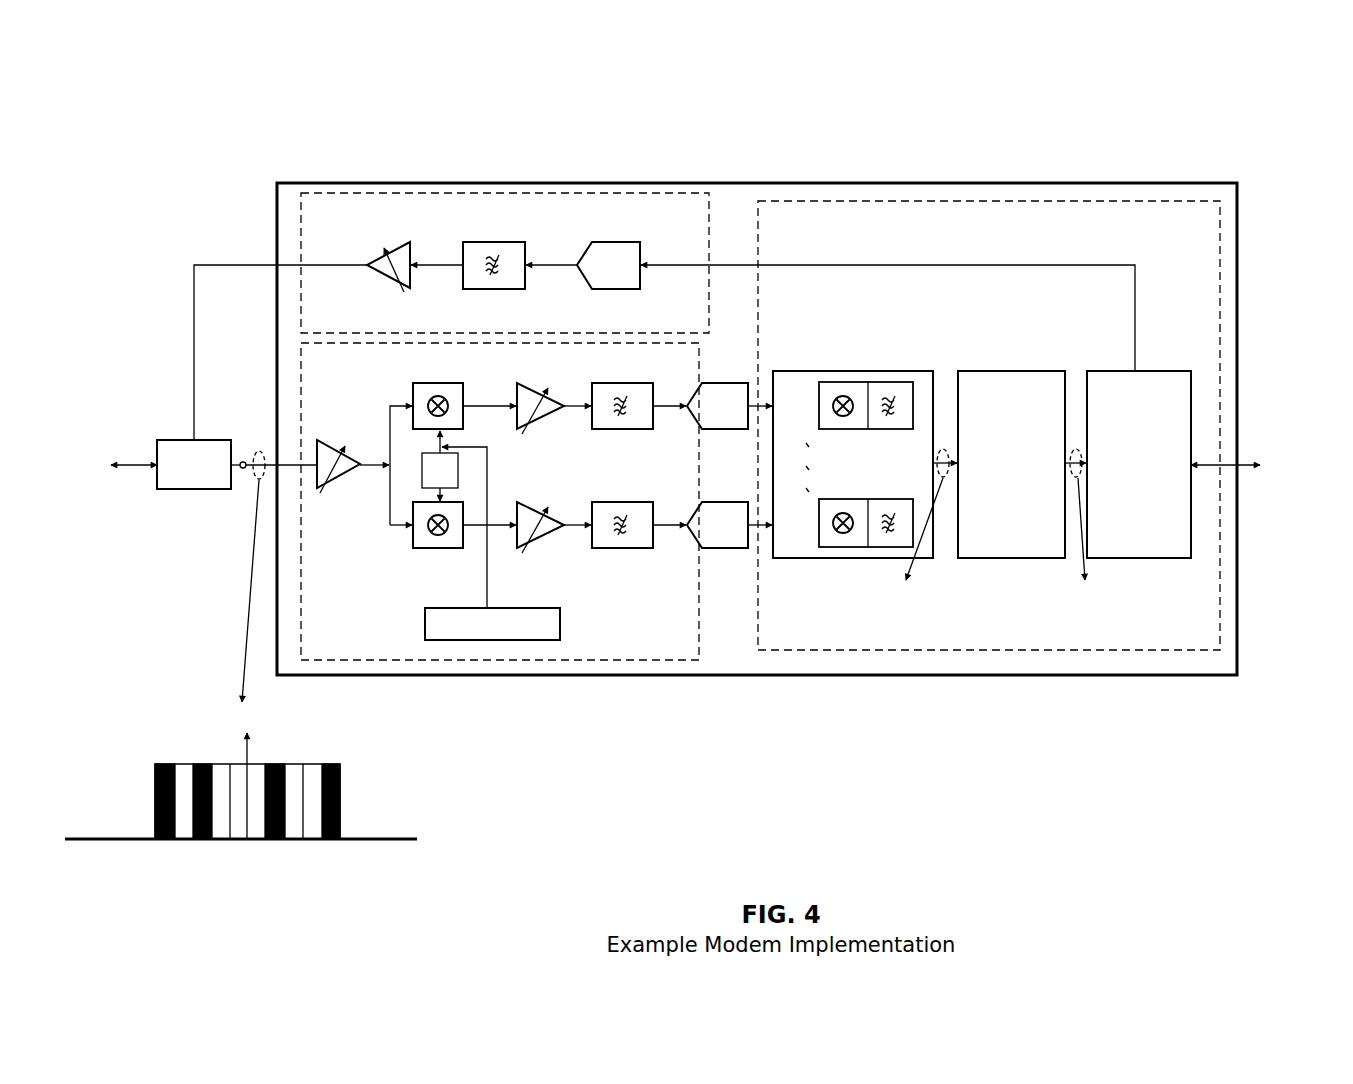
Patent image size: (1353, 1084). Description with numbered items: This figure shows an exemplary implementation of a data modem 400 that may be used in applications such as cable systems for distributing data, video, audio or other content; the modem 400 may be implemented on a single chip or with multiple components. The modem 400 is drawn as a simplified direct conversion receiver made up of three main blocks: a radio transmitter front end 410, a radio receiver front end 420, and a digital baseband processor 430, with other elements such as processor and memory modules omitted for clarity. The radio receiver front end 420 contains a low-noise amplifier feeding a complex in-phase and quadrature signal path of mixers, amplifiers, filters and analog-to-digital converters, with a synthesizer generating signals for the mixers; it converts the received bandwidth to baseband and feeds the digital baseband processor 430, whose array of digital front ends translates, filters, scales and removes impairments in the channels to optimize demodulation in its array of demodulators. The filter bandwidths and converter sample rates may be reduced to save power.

The data modem 400 is at (206, 108).
The radio transmitter front end 410 is at (718, 282).
The radio receiver front end 420 is at (536, 501).
The digital baseband processor 430 is at (989, 425).